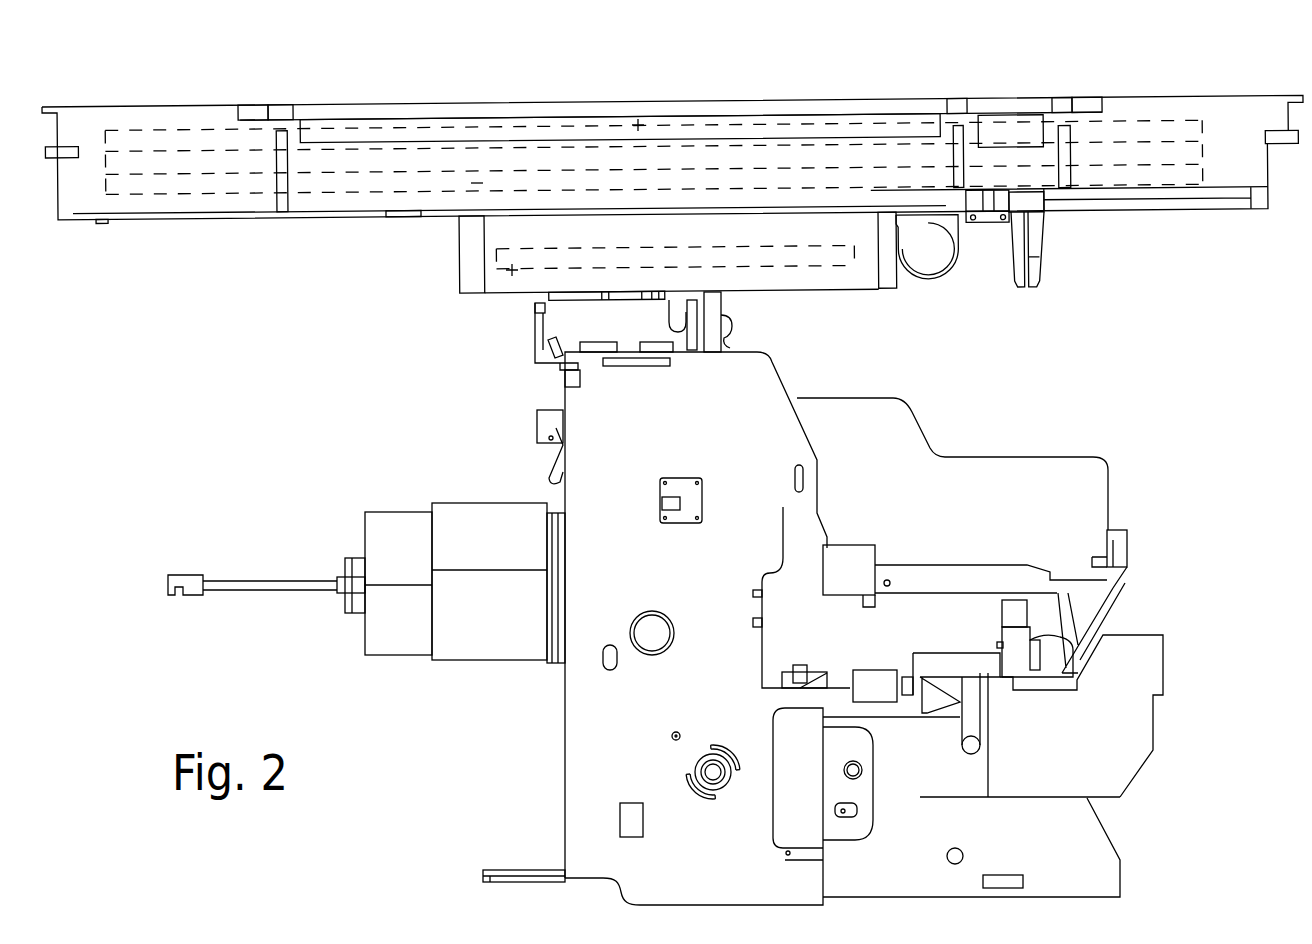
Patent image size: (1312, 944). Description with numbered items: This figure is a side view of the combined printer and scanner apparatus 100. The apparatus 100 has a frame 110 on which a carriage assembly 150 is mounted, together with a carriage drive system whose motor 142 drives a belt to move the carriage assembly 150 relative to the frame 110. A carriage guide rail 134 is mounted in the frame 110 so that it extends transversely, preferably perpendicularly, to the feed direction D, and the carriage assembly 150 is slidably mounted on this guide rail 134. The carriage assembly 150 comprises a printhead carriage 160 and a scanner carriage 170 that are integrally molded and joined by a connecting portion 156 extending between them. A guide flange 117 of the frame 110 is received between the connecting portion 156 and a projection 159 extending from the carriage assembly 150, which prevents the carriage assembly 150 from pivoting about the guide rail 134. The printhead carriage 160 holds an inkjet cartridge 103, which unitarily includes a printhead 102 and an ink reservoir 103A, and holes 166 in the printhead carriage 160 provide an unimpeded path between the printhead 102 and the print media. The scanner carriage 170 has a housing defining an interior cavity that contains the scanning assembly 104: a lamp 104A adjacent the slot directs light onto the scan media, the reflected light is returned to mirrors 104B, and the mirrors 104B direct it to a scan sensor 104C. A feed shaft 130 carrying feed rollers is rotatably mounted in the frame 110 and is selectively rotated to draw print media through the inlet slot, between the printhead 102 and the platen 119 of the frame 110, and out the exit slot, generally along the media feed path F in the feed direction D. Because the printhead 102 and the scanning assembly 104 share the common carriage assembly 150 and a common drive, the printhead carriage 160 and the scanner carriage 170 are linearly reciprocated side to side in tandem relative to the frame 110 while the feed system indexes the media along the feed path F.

The apparatus 100 is at (1075, 58).
The printhead 102 is at (873, 692).
The inkjet cartridge 103 is at (998, 455).
The ink reservoir 103A is at (890, 463).
The scanning assembly 104 is at (445, 215).
The lamp 104A is at (638, 128).
The mirrors 104B is at (477, 185).
The scan sensor 104C is at (512, 272).
The frame 110 is at (544, 829).
The guide flange 117 is at (680, 352).
The platen 119 is at (910, 703).
The feed shaft 130 is at (710, 777).
The carriage guide rail 134 is at (652, 620).
The motor 142 is at (392, 530).
The carriage assembly 150 is at (870, 345).
The connecting portion 156 is at (722, 322).
The projection 159 is at (667, 308).
The printhead carriage 160 is at (957, 623).
The holes 166 is at (847, 675).
The scanner carriage 170 is at (202, 106).
The media feed path F is at (806, 697).
The feed direction D is at (1200, 696).